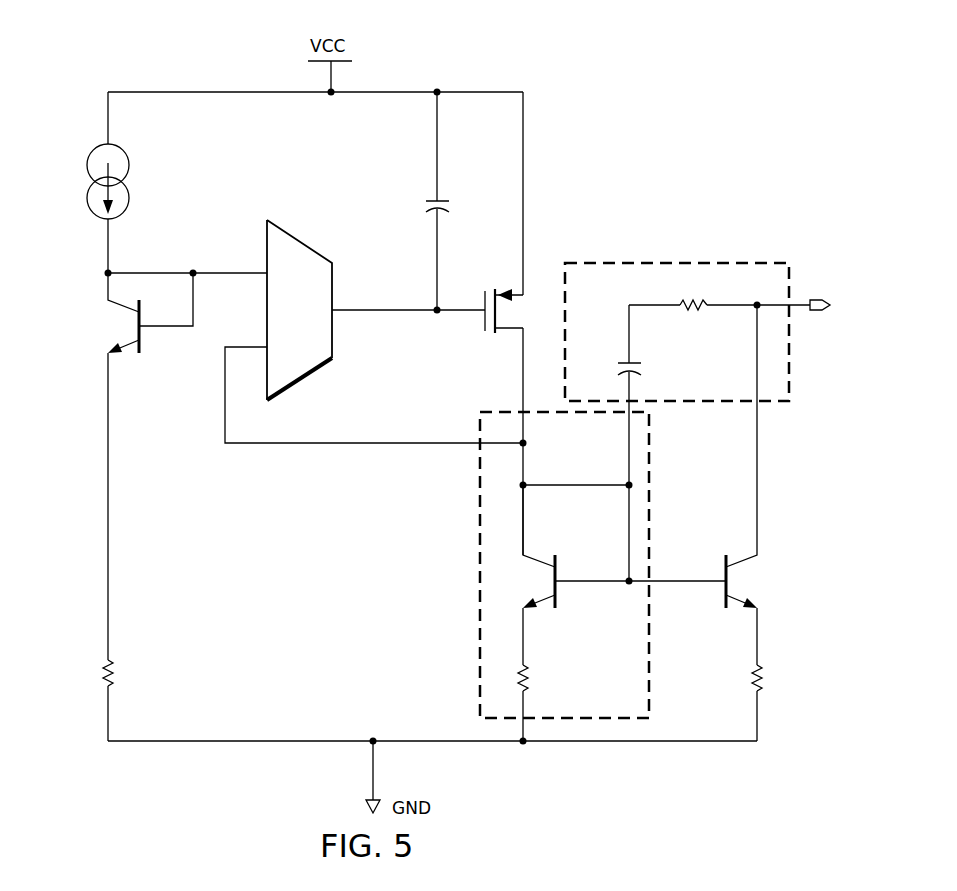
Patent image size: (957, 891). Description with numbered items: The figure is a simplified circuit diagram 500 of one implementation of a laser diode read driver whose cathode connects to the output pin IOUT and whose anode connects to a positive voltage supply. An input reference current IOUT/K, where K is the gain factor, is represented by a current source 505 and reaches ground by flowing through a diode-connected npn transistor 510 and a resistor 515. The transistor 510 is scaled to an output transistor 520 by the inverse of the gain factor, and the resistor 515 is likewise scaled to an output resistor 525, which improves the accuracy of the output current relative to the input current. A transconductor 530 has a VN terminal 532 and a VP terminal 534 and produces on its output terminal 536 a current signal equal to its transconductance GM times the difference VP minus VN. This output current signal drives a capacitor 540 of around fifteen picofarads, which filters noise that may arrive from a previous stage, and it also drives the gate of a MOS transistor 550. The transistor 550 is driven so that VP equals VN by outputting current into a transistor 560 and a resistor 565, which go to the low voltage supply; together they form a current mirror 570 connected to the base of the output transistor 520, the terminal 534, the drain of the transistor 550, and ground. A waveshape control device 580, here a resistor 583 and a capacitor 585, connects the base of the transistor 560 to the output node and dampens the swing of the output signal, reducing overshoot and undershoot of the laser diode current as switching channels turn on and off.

The circuit diagram 500 is at (126, 66).
The current source 505 is at (128, 181).
The transistor 510 is at (143, 336).
The resistor 515 is at (100, 672).
The output transistor 520 is at (723, 565).
The output resistor 525 is at (767, 677).
The transconductor 530 is at (334, 335).
The VN terminal 532 is at (207, 270).
The VP terminal 534 is at (225, 395).
The output terminal 536 is at (390, 307).
The capacitor 540 is at (426, 203).
The MOS transistor 550 is at (515, 312).
The transistor 560 is at (560, 591).
The resistor 565 is at (533, 677).
The current mirror 570 is at (480, 614).
The waveshape control device 580 is at (703, 260).
The resistor 583 is at (693, 316).
The capacitor 585 is at (615, 370).